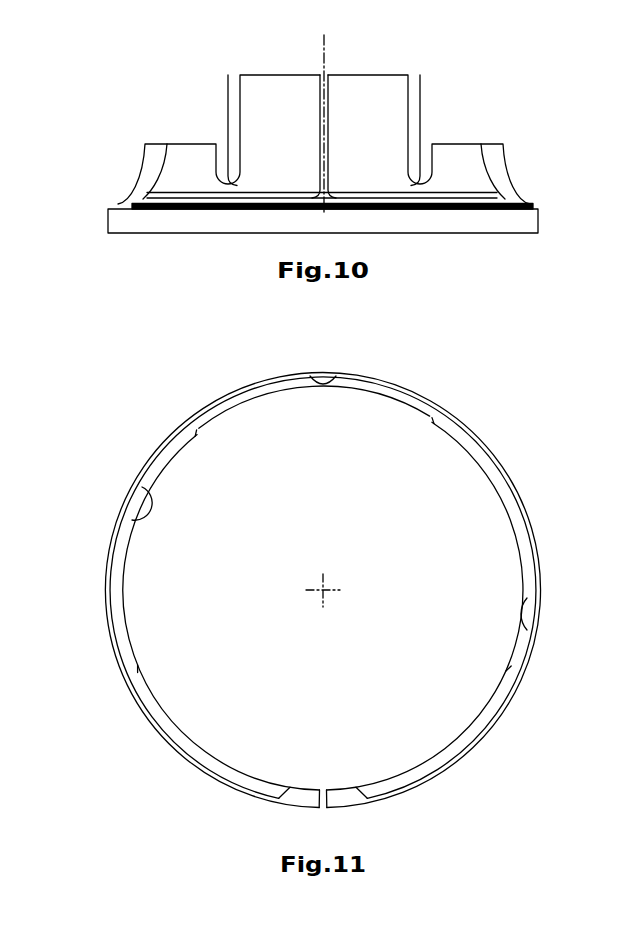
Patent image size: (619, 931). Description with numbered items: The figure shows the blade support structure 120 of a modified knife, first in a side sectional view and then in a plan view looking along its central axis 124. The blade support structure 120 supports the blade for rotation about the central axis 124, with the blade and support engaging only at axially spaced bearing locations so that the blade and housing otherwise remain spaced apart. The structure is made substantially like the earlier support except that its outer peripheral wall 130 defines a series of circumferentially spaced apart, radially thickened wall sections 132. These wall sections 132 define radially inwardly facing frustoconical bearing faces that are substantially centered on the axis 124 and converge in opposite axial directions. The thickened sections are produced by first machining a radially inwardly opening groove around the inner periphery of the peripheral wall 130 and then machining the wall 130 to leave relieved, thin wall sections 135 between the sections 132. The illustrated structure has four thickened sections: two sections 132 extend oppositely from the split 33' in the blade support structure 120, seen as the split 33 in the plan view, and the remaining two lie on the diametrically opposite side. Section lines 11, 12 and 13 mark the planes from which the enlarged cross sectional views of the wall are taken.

In FIG. 10, the blade support structure 120 is at (440, 103).
In FIG. 11, the blade support structure 120 is at (122, 738).
In FIG. 10, the outer peripheral wall 130 is at (530, 227).
In FIG. 11, the outer peripheral wall 130 is at (104, 656).
In FIG. 10, the central axis 124 is at (323, 36).
In FIG. 11, the central axis 124 is at (340, 606).
In FIG. 10, the split 33' is at (380, 116).
In FIG. 11, the split 33 is at (368, 814).
In FIG. 11, the thickened wall sections 132 is at (197, 432).
In FIG. 11, the thin wall sections 135 is at (323, 375).
In FIG. 10, the line 11— 11 is at (87, 242).
In FIG. 11, the line 12— 12 is at (200, 402).
In FIG. 11, the line 13— 13 is at (90, 588).